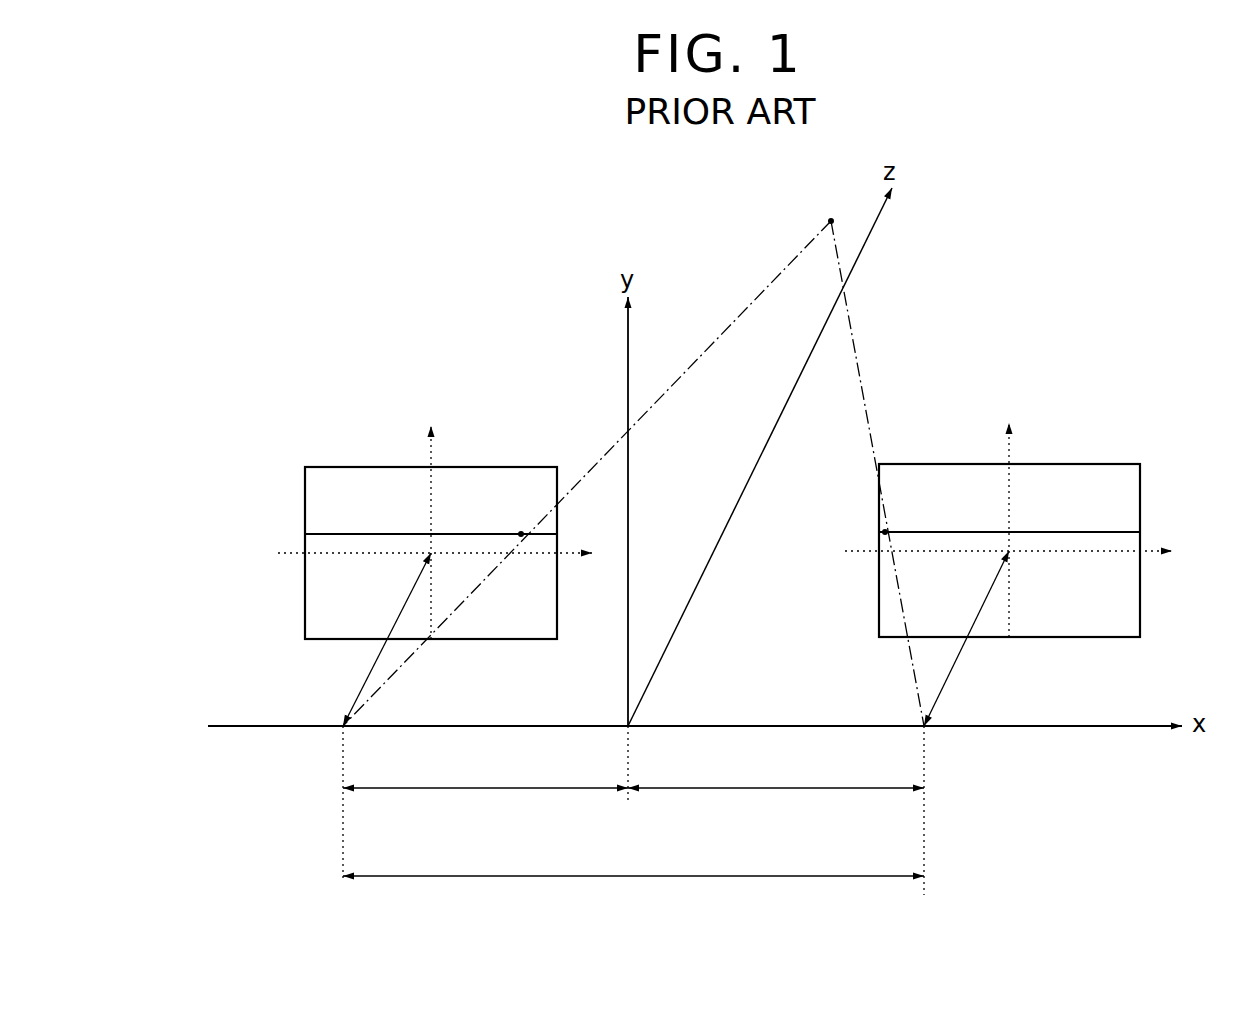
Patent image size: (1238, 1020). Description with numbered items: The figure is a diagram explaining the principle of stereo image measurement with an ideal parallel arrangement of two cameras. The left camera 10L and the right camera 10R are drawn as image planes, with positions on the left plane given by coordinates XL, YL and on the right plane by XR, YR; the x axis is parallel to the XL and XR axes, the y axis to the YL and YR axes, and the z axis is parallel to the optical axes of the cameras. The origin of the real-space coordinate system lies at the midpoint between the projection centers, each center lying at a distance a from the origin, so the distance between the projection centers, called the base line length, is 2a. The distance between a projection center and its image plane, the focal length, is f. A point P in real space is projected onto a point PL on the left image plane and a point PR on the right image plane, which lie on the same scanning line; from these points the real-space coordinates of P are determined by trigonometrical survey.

The left camera 10L is at (348, 467).
The right camera 10R is at (1077, 464).
The point in real space P is at (633, 458).
The projected point on left image plane PL is at (482, 519).
The projected point on right image plane PR is at (934, 518).
The focal length f is at (682, 638).
The half base line length a is at (633, 771).
The base line length 2a is at (633, 857).